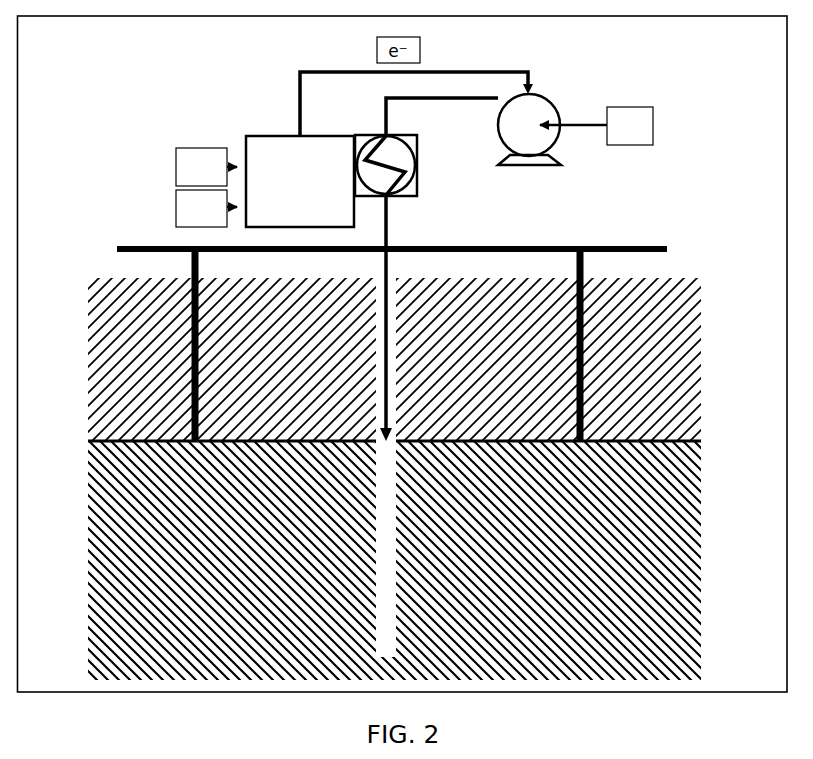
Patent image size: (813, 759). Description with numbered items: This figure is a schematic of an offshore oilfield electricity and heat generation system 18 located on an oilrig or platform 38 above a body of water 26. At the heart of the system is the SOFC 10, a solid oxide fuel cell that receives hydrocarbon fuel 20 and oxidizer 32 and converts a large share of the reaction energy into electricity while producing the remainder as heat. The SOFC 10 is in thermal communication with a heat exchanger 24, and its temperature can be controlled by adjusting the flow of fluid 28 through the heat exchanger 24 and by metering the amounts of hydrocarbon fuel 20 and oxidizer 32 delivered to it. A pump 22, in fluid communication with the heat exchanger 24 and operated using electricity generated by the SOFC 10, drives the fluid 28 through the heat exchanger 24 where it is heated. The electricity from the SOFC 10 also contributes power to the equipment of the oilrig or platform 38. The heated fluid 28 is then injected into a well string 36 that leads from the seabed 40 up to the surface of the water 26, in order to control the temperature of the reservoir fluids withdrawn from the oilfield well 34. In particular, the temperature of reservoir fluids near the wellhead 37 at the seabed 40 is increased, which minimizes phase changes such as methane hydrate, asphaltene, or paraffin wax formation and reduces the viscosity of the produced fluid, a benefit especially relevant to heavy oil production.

The SOFC 10 is at (300, 181).
The oilfield electricity and heat generation system 18 is at (662, 183).
The hydrocarbon fuel 20 is at (206, 167).
The pump 22 is at (537, 110).
The heat exchanger 24 is at (415, 166).
The body of water 26 is at (128, 345).
The fluid 28 is at (455, 99).
The oxidizer 32 is at (206, 208).
The oilfield well 34 is at (385, 497).
The well string 36 is at (375, 353).
The wellhead 37 is at (404, 436).
The oilrig or platform 38 is at (667, 252).
The seabed 40 is at (640, 480).